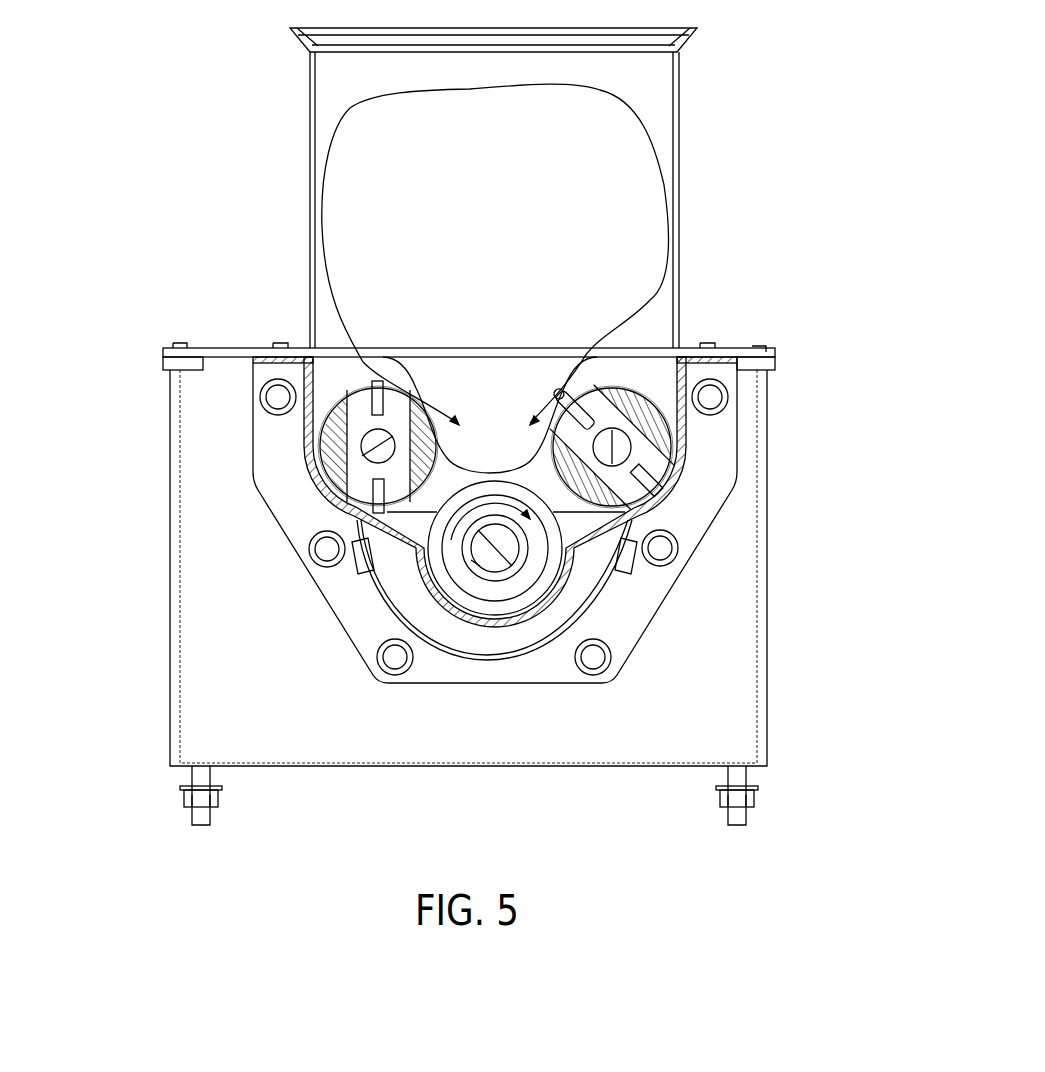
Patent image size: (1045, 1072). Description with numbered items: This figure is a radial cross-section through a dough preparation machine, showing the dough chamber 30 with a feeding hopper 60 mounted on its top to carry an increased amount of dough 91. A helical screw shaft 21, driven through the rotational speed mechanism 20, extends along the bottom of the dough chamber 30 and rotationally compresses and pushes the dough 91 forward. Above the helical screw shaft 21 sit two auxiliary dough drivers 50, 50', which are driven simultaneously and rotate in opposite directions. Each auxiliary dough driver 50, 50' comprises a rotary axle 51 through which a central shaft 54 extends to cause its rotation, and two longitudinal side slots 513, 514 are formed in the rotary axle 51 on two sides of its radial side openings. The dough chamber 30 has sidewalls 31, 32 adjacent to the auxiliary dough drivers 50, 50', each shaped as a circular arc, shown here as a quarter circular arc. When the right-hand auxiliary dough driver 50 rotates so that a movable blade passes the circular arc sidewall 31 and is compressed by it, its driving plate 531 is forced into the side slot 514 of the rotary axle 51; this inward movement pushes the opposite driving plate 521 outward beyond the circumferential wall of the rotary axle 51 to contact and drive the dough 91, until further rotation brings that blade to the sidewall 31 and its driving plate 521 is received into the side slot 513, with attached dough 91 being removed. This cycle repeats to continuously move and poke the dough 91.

The rotational speed mechanism 20 is at (165, 595).
The helical screw shaft 21 is at (458, 585).
The dough chamber 30 is at (283, 553).
The sidewall 31 is at (645, 470).
The sidewall 32 is at (357, 520).
The auxiliary dough driver 50 is at (728, 454).
The auxiliary dough driver 50' is at (237, 440).
The rotary axle 51 is at (347, 434).
The central shaft 54 is at (372, 452).
The feeding hopper 60 is at (310, 127).
The dough 91 is at (340, 262).
The side slot 513 is at (672, 425).
The side slot 514 is at (672, 458).
The driving plate 521 is at (580, 383).
The driving plate 531 is at (645, 490).